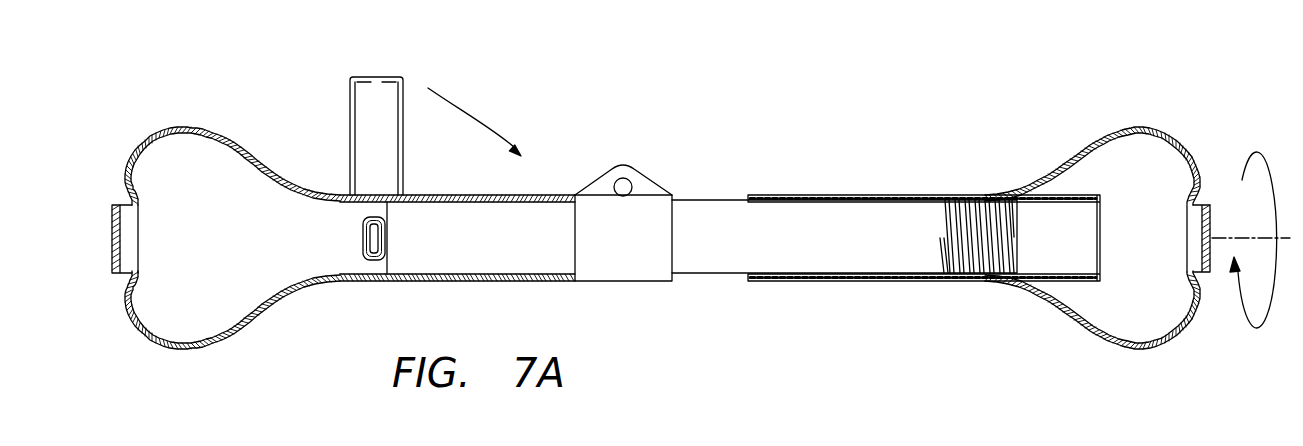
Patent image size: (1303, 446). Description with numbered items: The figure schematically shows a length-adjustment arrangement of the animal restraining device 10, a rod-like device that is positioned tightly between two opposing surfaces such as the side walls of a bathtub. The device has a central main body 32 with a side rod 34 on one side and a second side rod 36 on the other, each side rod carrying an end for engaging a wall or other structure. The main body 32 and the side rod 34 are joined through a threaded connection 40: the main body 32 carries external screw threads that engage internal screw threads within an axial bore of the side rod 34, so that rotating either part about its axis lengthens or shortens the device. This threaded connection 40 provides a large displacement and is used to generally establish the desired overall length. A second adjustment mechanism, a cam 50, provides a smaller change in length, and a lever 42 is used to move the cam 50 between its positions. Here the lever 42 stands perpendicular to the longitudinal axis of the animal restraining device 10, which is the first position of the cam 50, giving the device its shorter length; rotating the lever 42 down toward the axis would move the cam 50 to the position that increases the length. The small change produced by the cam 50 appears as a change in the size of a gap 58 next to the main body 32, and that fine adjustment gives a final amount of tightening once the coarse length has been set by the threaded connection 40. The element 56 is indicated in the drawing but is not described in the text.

The animal restraining device 10 is at (814, 88).
The main body 32 is at (632, 265).
The side rod 34 is at (1110, 135).
The side rod 36 is at (210, 127).
The threaded connection 40 is at (986, 174).
The lever 42 is at (374, 77).
The cam 50 is at (367, 261).
The inner sleeve end 56 is at (392, 262).
The gap 58 is at (573, 183).